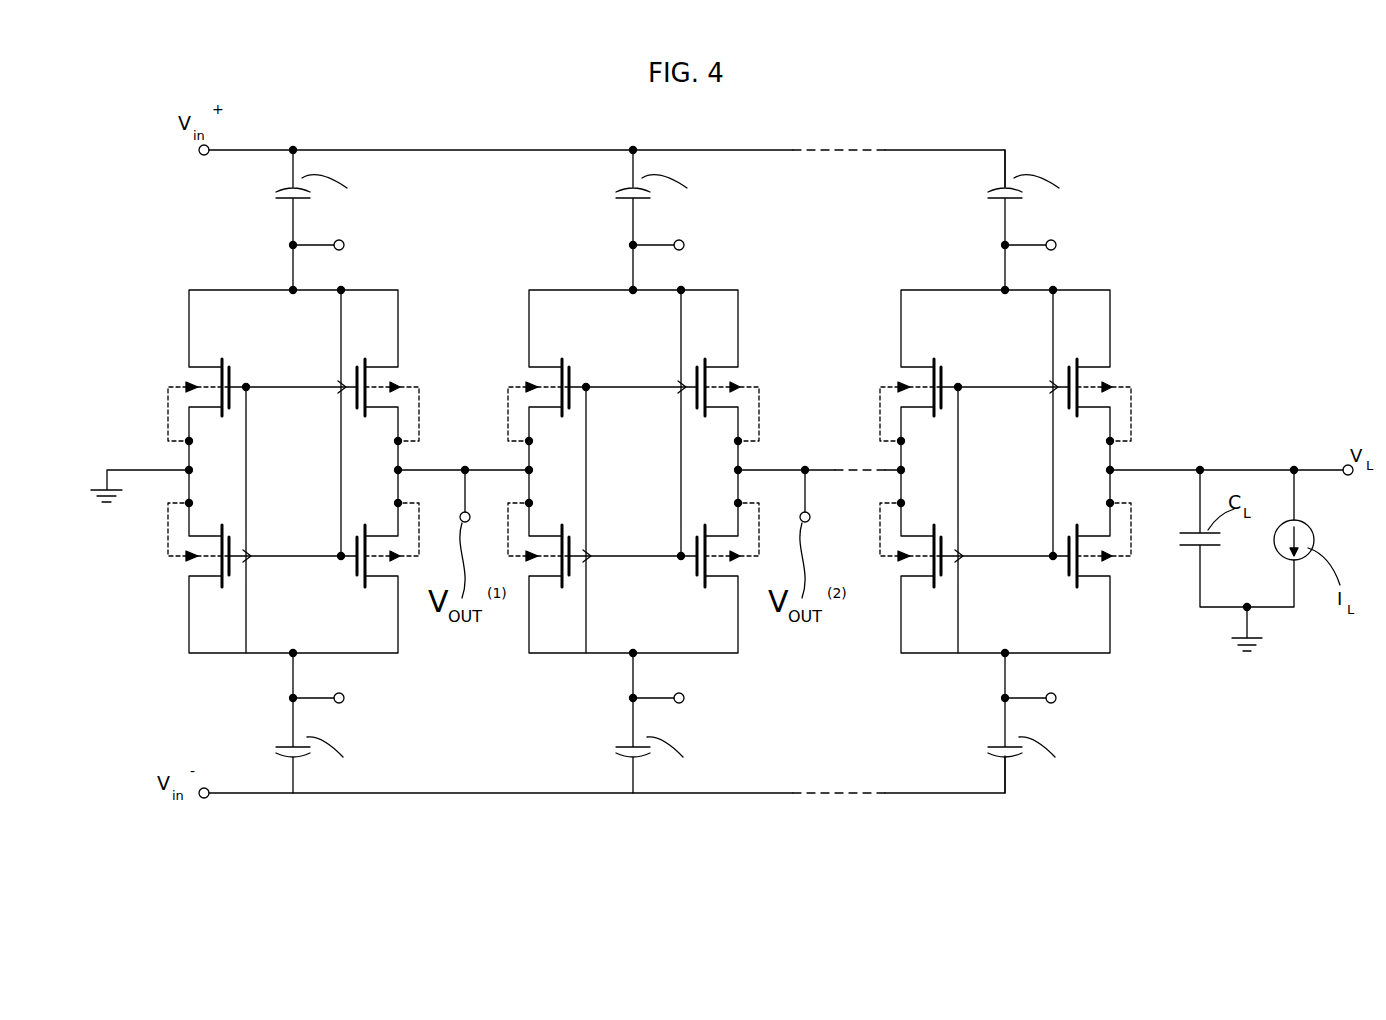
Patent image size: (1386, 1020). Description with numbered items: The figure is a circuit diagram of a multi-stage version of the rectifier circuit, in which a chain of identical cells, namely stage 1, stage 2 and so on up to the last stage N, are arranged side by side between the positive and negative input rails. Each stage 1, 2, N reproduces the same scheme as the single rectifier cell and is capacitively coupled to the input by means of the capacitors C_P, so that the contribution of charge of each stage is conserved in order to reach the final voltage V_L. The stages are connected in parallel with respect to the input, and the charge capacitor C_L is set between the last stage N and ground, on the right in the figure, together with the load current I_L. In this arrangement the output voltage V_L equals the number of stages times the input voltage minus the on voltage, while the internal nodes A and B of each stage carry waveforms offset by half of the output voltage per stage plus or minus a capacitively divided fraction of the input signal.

The first stage 1 is at (293, 470).
The second stage 2 is at (633, 470).
The N-th stage N is at (1005, 471).